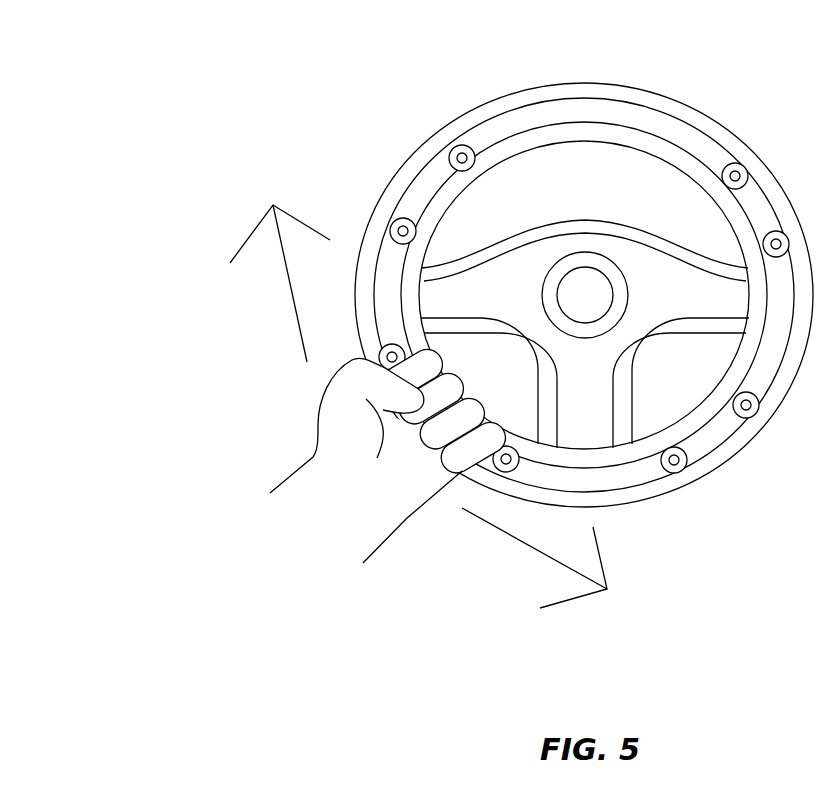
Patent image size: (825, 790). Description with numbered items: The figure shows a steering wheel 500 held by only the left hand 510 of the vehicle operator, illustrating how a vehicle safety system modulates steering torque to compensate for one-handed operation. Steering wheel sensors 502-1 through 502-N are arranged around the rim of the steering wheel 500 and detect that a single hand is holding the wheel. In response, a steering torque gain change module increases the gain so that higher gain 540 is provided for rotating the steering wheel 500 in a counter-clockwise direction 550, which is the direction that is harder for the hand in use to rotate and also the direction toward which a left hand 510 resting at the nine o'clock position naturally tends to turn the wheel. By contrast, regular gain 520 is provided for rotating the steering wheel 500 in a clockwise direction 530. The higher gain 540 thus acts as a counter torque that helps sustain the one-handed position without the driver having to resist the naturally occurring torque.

The steering wheel 500 is at (158, 86).
The steering wheel sensor 502-1 is at (398, 219).
The steering wheel sensor 502-N is at (687, 475).
The left hand 510 is at (361, 512).
The regular gain 520 is at (133, 322).
The clockwise direction 530 is at (300, 218).
The higher gain 540 is at (732, 590).
The counter-clockwise direction 550 is at (567, 601).